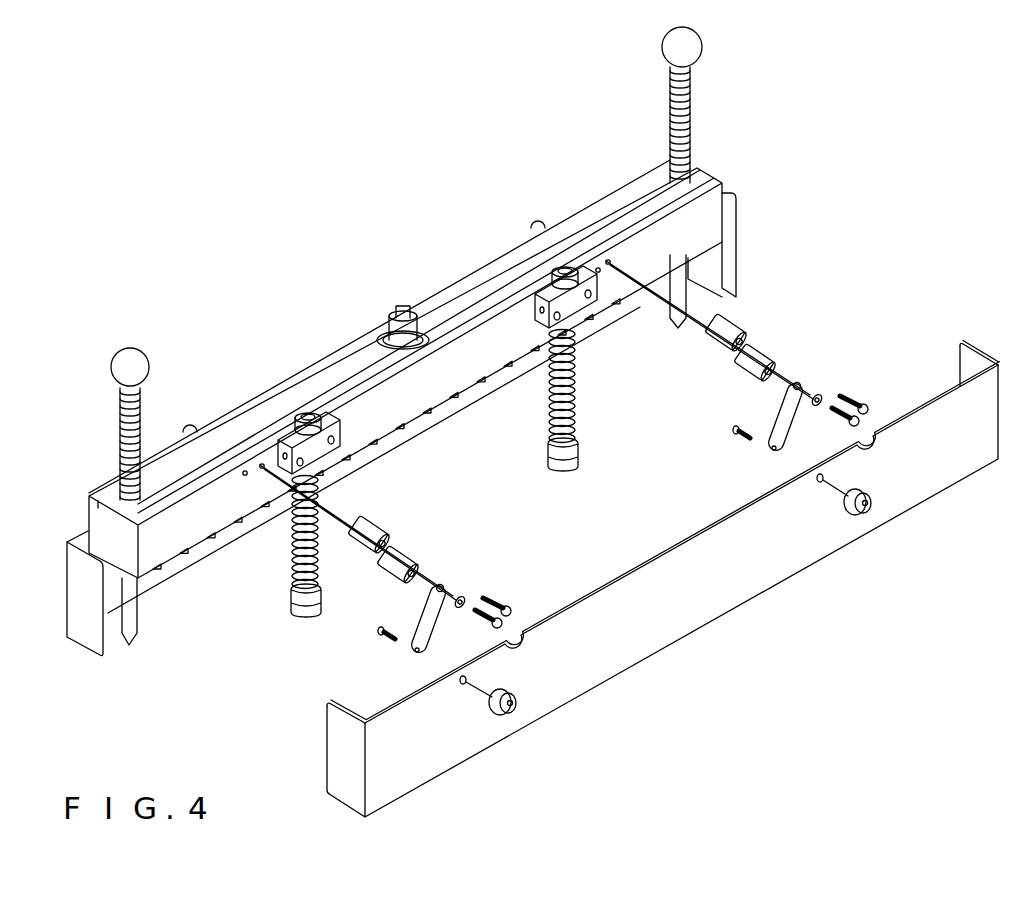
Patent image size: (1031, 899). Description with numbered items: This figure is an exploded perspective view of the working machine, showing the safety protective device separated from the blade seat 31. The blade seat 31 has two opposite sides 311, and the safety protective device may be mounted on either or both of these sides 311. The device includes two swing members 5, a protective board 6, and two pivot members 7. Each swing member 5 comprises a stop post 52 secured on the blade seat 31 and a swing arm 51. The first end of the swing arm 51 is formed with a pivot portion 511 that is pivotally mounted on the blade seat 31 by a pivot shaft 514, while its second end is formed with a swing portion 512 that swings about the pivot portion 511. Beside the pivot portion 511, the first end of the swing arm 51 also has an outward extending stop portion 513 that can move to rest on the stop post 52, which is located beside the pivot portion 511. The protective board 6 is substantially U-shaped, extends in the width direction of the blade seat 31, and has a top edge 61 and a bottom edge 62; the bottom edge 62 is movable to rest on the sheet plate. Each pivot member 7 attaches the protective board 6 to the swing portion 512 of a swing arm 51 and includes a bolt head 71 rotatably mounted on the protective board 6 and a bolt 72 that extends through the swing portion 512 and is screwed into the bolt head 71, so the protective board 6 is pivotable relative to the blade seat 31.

The swing member 5 is at (538, 210).
The blade seat 31 is at (246, 425).
The opposite sides 311 is at (217, 513).
The swing arm 51 is at (428, 611).
The pivot portion 511 is at (440, 584).
The swing portion 512 is at (413, 653).
The stop portion 513 is at (455, 592).
The pivot shaft 514 is at (403, 560).
The stop post 52 is at (378, 520).
The protective board 6 is at (663, 579).
The top edge 61 is at (575, 597).
The bottom edge 62 is at (738, 620).
The pivot member 7 is at (706, 651).
The bolt head 71 is at (522, 700).
The bolt 72 is at (378, 634).